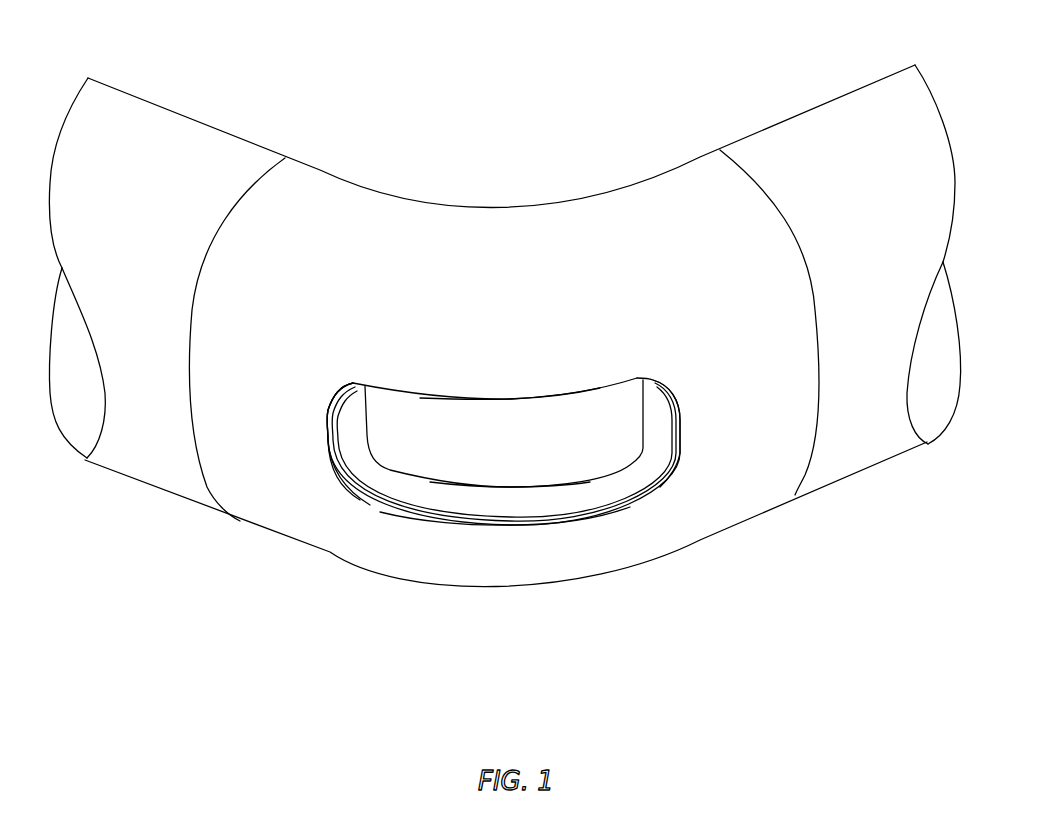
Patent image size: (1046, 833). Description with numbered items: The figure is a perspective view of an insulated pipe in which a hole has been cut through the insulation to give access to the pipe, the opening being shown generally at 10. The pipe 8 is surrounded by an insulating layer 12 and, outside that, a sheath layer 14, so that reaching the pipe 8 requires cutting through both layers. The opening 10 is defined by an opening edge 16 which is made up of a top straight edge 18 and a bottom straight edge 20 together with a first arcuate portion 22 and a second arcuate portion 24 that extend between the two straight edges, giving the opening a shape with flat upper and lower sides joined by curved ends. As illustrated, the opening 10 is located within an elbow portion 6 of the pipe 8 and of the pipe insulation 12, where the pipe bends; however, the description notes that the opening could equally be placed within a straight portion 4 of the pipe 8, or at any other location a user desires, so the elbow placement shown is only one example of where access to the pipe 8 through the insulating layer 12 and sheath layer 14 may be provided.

The straight portion 4 is at (167, 110).
The elbow portion 6 is at (322, 170).
The pipe 8 is at (593, 437).
The opening 10 is at (608, 332).
The insulating layer 12 is at (502, 510).
The sheath layer 14 is at (187, 430).
The opening edge 16 is at (348, 412).
The top straight edge 18 is at (515, 385).
The bottom straight edge 20 is at (428, 535).
The first arcuate portion 22 is at (683, 418).
The second arcuate portion 24 is at (330, 460).